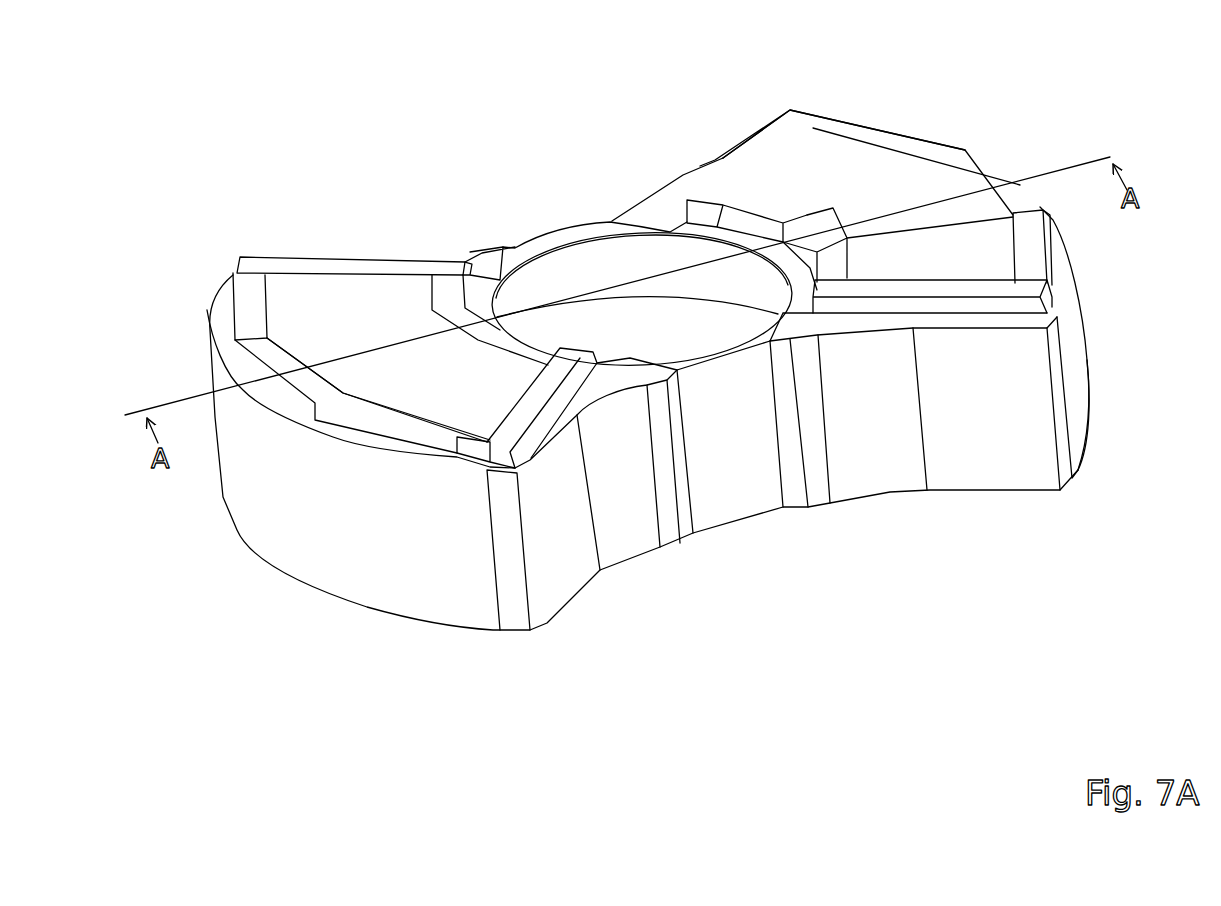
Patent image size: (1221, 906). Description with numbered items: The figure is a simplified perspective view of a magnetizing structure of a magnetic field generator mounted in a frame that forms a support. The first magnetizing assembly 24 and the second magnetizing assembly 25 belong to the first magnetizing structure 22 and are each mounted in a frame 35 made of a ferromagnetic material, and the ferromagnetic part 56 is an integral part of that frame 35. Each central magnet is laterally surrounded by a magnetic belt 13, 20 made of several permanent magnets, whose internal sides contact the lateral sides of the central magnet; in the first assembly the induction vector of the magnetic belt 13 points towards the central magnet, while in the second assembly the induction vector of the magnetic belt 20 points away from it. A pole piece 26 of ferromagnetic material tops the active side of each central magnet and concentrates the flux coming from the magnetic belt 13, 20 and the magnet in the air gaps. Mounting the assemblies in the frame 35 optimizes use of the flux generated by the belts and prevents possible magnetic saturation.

The magnetic belt 13 is at (461, 321).
The magnetic belt 20 is at (763, 208).
The first magnetizing structure 22 is at (1118, 232).
The first magnetizing assembly 24 is at (385, 636).
The second magnetizing assembly 25 is at (992, 500).
The pole piece 26 is at (837, 166).
The frame 35 is at (1033, 413).
The ferromagnetic part 56 is at (752, 503).